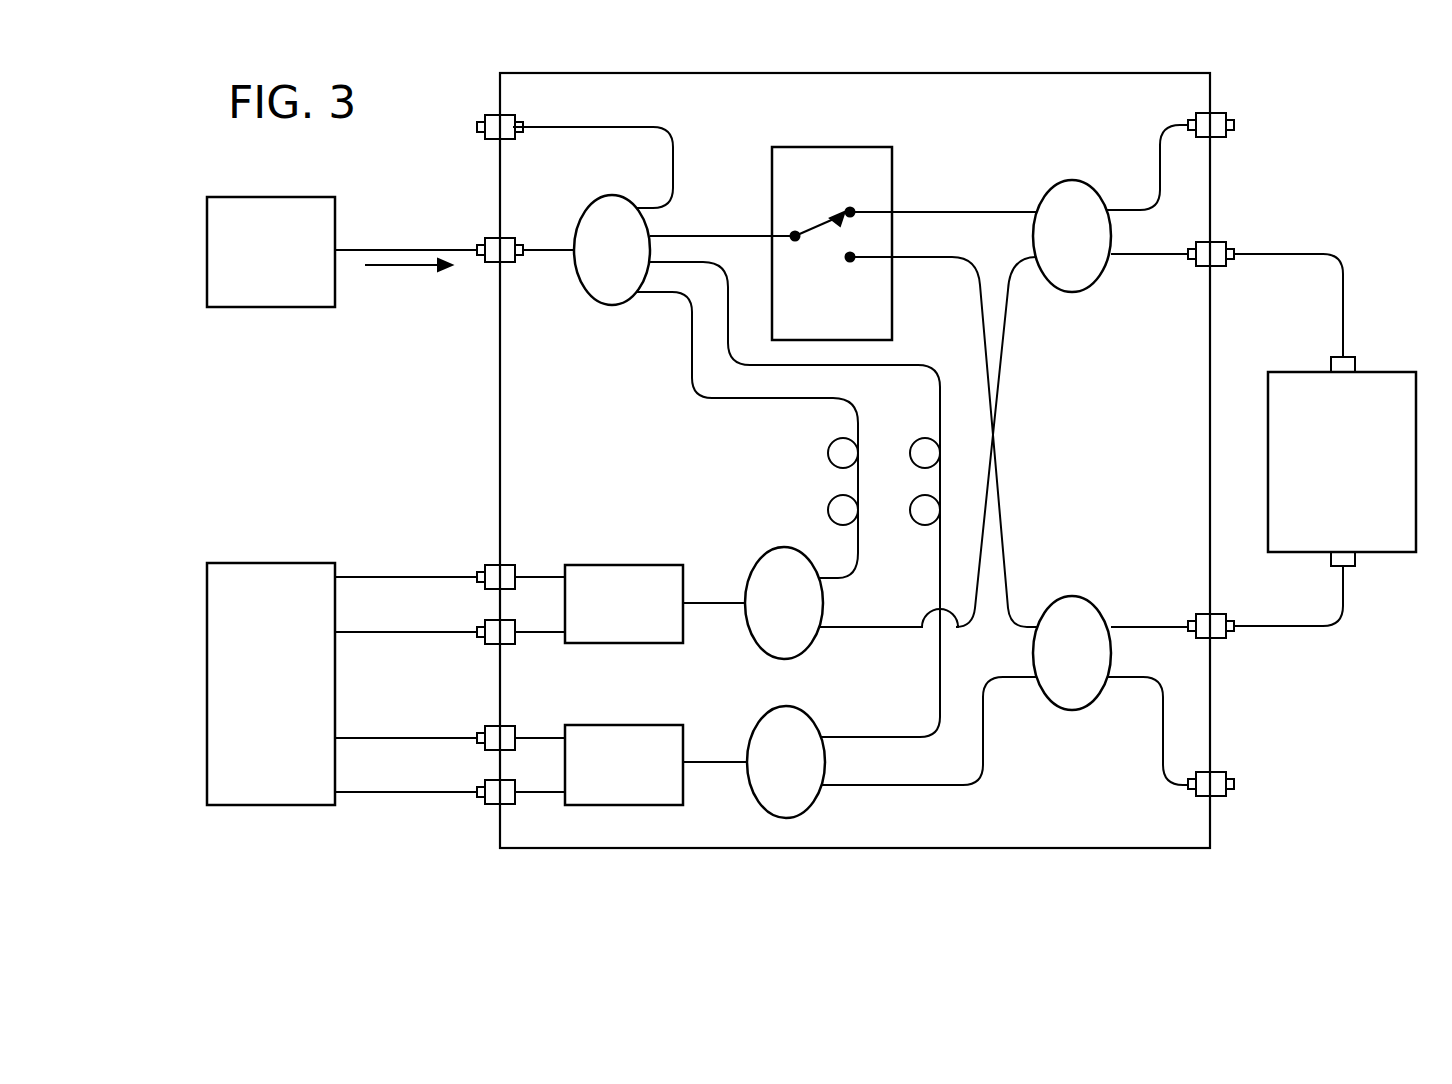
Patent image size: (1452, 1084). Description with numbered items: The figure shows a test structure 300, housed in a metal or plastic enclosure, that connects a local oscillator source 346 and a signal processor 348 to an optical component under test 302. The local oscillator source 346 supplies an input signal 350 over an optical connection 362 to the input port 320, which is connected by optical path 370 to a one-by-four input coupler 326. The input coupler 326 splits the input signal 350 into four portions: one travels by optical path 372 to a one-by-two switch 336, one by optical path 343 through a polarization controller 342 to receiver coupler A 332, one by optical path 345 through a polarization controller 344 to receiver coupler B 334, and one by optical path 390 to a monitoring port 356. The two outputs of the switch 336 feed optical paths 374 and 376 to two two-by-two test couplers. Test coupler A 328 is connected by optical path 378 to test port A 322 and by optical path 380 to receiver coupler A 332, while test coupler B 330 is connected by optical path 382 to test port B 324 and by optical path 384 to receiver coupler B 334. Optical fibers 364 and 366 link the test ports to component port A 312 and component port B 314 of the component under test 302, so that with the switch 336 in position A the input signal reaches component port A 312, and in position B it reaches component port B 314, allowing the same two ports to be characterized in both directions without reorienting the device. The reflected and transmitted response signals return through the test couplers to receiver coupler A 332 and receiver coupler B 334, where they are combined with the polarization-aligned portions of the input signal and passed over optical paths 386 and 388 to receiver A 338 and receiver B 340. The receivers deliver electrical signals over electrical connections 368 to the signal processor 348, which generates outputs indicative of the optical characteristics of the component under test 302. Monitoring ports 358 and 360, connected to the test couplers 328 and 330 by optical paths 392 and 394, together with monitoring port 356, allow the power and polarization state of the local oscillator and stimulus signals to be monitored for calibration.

The test structure 300 is at (920, 73).
The component under test 302 is at (1290, 371).
The component port A 312 is at (1356, 363).
The component port B 314 is at (1357, 562).
The input port 320 is at (484, 238).
The test port A 322 is at (1221, 241).
The test port B 324 is at (1220, 640).
The input coupler 326 is at (615, 305).
The test coupler A 328 is at (1070, 180).
The test coupler B 330 is at (1075, 710).
The receiver coupler A 332 is at (767, 655).
The receiver coupler B 334 is at (771, 815).
The switch 336 is at (850, 146).
The receiver A 338 is at (595, 564).
The receiver B 340 is at (595, 724).
The polarization controller 342 is at (798, 439).
The optical path 343 is at (693, 372).
The polarization controller 344 is at (900, 536).
The optical path 345 is at (893, 737).
The local oscillator source 346 is at (280, 307).
The signal processor 348 is at (232, 562).
The input signal 350 is at (406, 314).
The monitoring port 356 is at (494, 140).
The monitoring port 358 is at (1220, 138).
The monitoring port 360 is at (1220, 797).
The input signal line 362 is at (372, 238).
The optical fiber 364 is at (1346, 277).
The optical fiber 366 is at (1324, 628).
The electrical connections 368 is at (380, 576).
The optical path 370 is at (543, 249).
The optical path 372 is at (737, 235).
The optical path 374 is at (950, 211).
The optical path 376 is at (1007, 560).
The optical path 378 is at (1150, 256).
The optical path 380 is at (1009, 323).
The optical path 382 is at (1150, 626).
The optical path 384 is at (984, 773).
The optical path 386 is at (712, 603).
The optical path 388 is at (712, 762).
The optical path 390 is at (588, 126).
The optical path 392 is at (1160, 140).
The optical path 394 is at (1162, 773).